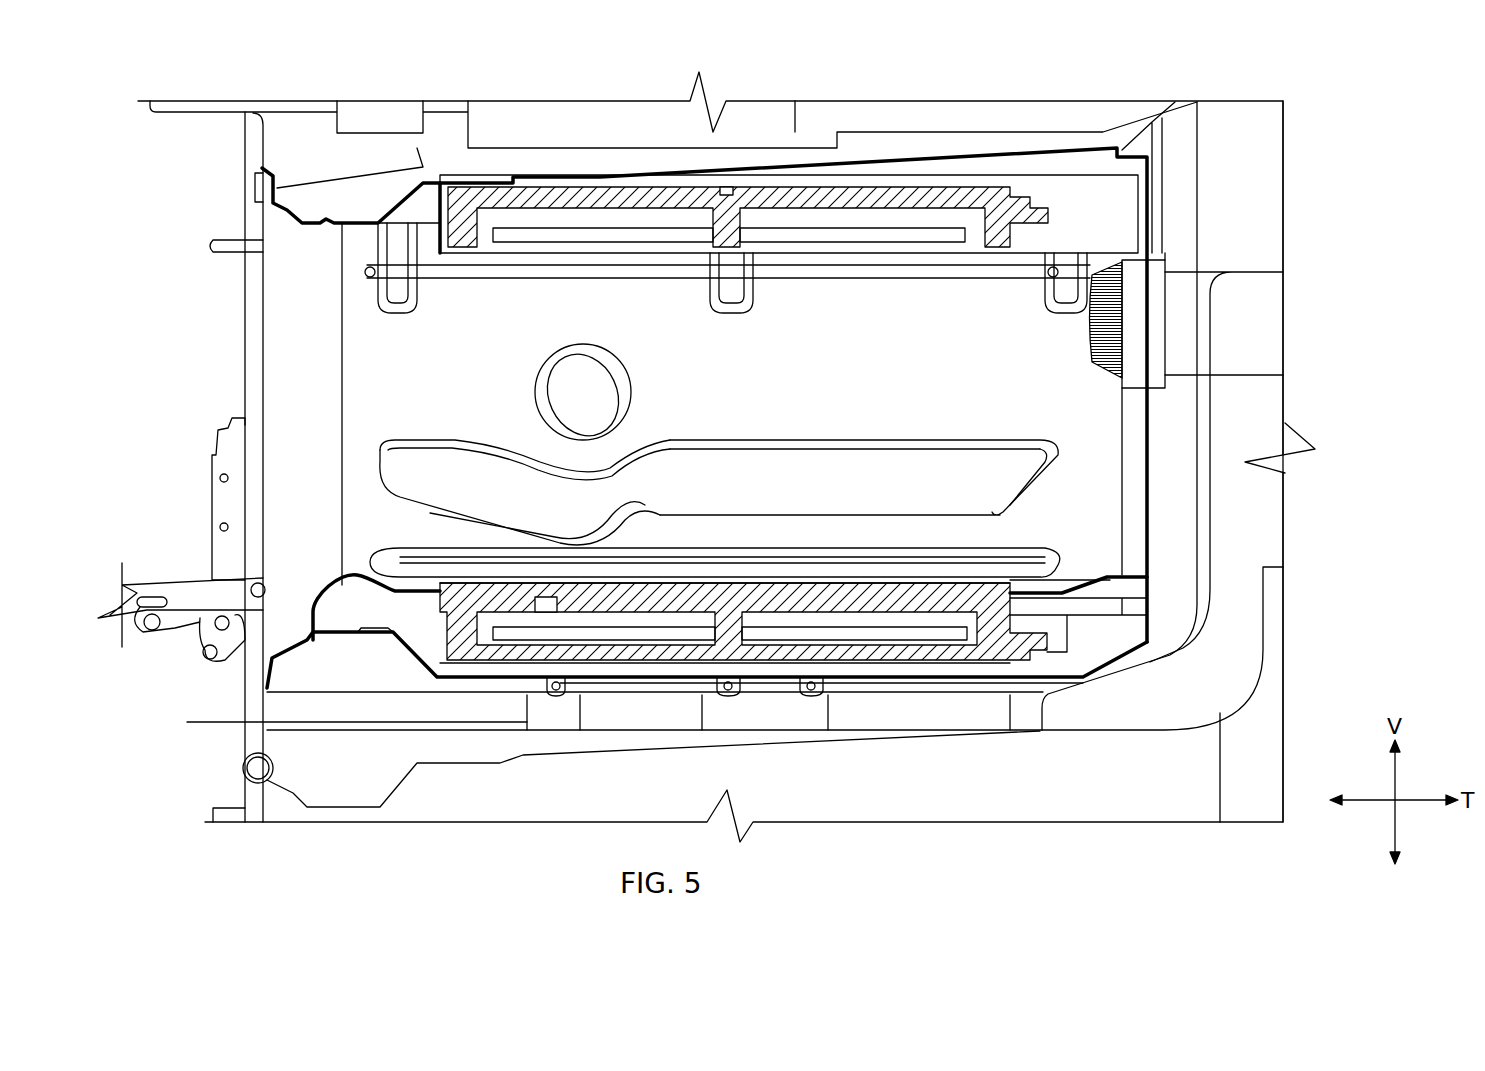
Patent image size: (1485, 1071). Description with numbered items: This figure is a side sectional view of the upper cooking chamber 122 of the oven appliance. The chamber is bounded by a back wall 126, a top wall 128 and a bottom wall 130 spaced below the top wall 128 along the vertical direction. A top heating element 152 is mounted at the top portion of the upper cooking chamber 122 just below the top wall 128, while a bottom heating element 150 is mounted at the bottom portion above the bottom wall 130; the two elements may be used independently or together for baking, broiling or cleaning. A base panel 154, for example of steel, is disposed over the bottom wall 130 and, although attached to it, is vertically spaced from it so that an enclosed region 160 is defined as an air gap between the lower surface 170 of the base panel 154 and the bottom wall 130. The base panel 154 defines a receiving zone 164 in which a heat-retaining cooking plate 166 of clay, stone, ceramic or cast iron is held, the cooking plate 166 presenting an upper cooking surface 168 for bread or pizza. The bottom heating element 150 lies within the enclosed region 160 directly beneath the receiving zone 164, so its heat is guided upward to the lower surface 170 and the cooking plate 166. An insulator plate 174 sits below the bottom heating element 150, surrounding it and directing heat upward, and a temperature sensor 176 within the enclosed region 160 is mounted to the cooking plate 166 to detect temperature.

The upper cooking chamber 122 is at (278, 332).
The back wall 126 is at (1147, 453).
The top wall 128 is at (992, 150).
The bottom wall 130 is at (1083, 675).
The bottom heating element 150 is at (960, 647).
The top heating element 152 is at (890, 232).
The base panel 154 is at (1063, 593).
The enclosed region 160 is at (1122, 643).
The receiving zone 164 is at (430, 582).
The cooking plate 166 is at (1000, 512).
The upper cooking surface 168 is at (903, 572).
The lower surface 170 is at (800, 618).
The insulator plate 174 is at (887, 658).
The temperature sensor 176 is at (550, 597).